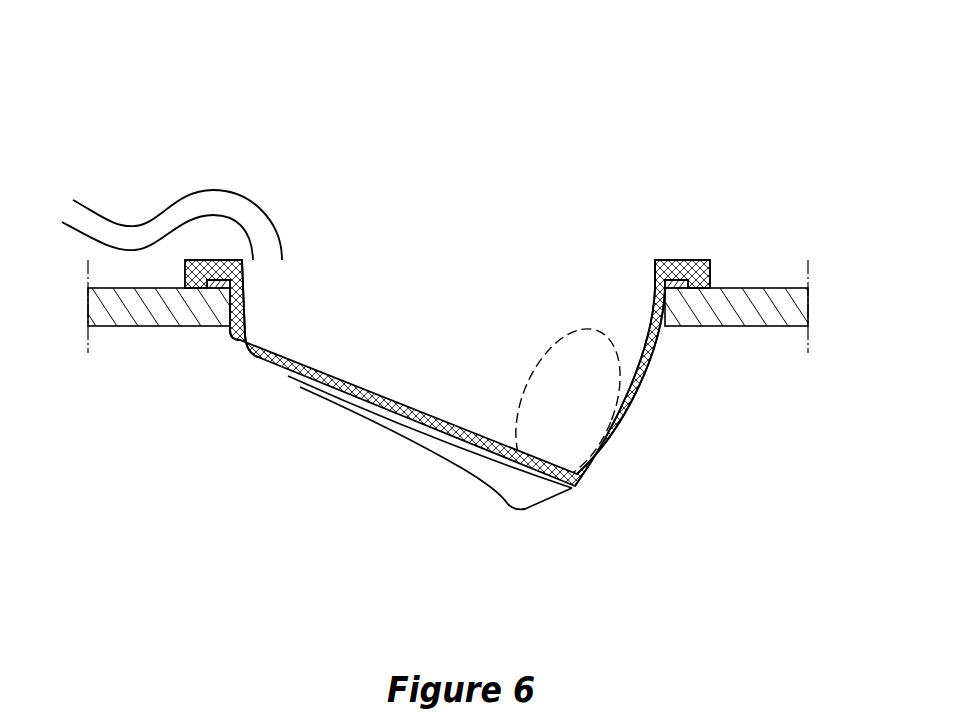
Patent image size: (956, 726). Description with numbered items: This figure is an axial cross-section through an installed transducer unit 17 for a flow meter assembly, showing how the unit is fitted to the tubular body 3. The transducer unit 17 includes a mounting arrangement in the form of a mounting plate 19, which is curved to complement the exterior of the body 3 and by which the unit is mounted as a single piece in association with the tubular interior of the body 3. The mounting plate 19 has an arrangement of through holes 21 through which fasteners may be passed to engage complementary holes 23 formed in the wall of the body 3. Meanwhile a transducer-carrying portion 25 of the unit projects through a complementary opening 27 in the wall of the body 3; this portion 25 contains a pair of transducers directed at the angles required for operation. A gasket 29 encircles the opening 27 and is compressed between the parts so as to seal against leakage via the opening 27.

The body 3 is at (760, 291).
The transducer unit 17 is at (557, 170).
The mounting plate 19 is at (715, 258).
The through holes 21 is at (683, 258).
The complementary holes 23 is at (667, 334).
The transducer-carrying portion 25 is at (538, 497).
The opening 27 is at (233, 328).
The gasket 29 is at (217, 290).